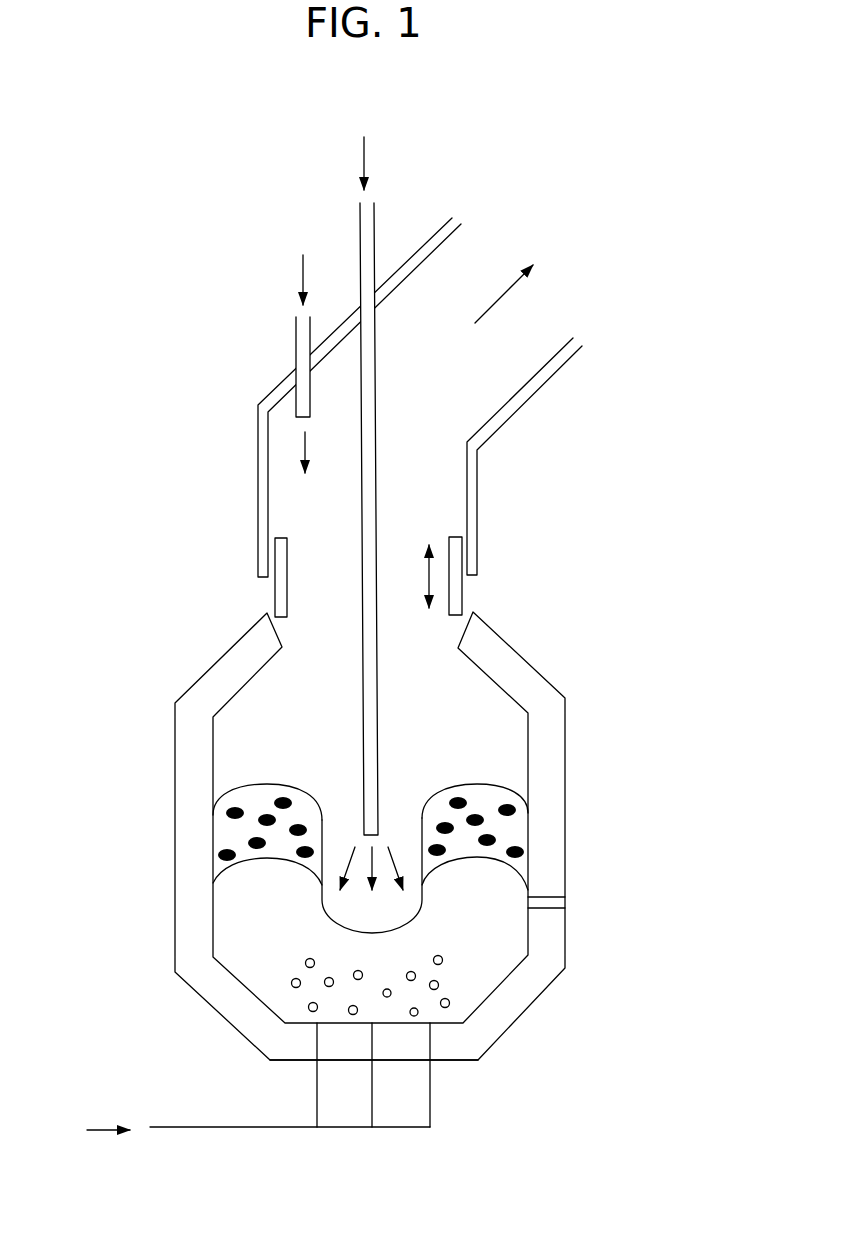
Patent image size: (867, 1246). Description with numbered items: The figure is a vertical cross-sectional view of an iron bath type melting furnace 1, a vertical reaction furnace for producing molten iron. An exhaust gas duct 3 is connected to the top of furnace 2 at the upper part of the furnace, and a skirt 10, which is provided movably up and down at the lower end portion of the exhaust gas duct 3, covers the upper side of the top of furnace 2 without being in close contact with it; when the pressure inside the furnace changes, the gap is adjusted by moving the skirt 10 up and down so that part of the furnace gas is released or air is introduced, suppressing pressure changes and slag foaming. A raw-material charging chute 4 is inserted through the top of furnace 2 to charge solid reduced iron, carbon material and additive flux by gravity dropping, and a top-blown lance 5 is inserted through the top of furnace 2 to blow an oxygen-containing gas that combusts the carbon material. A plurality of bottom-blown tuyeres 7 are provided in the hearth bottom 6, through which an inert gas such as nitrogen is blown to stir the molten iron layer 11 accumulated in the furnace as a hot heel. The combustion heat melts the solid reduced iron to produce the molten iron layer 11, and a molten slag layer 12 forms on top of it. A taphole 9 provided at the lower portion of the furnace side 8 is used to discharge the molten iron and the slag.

The iron bath type melting furnace 1 is at (664, 800).
The top of furnace 2 is at (390, 614).
The exhaust gas duct 3 is at (553, 378).
The raw-material charging chute 4 is at (296, 330).
The top-blown lance 5 is at (374, 222).
The hearth bottom 6 is at (468, 1062).
The bottom-blown tuyeres 7 is at (375, 1108).
The furnace side 8 is at (565, 755).
The taphole 9 is at (565, 900).
The skirt 10 is at (462, 590).
The molten iron layer 11 is at (488, 968).
The molten slag layer 12 is at (227, 835).